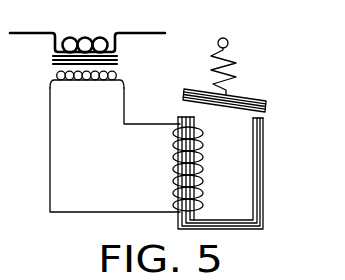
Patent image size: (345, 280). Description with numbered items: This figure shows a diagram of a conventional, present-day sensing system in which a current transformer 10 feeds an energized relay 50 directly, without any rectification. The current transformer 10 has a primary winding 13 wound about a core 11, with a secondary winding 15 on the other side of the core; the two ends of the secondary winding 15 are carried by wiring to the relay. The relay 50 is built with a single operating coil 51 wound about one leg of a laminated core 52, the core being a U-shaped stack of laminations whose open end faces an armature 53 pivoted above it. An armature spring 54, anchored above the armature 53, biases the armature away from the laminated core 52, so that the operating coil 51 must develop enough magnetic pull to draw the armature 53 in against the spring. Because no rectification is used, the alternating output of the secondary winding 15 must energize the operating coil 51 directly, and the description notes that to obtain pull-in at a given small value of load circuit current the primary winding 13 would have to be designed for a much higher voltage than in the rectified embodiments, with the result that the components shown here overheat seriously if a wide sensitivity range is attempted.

The transformer 10 is at (97, 61).
The transformer core 11 is at (54, 60).
The primary winding 13 is at (89, 36).
The secondary winding 15 is at (86, 80).
The relay 50 is at (234, 173).
The operating coil 51 is at (203, 131).
The laminated core 52 is at (263, 202).
The armature 53 is at (185, 91).
The armature spring 54 is at (236, 68).